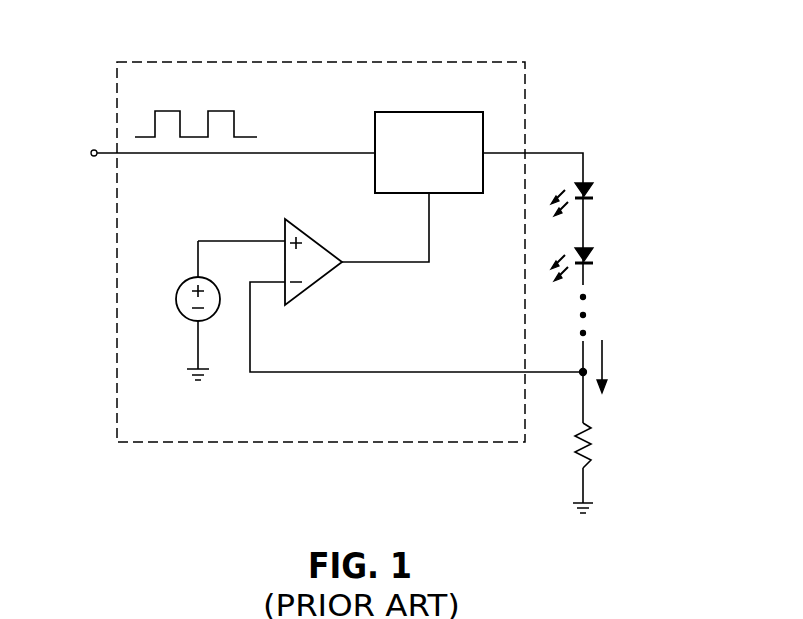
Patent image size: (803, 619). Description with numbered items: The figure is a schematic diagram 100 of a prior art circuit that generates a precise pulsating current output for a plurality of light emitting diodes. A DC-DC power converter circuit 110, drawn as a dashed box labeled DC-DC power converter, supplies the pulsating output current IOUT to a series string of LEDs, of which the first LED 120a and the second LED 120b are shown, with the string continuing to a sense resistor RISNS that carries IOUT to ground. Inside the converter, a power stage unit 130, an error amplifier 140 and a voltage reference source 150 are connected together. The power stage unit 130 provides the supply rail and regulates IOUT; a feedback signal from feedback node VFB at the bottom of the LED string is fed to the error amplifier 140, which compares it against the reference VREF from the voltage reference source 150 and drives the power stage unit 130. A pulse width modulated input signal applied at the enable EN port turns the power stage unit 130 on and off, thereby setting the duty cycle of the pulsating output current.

The schematic diagram 100 is at (144, 28).
The DC-DC power converter circuit 110 is at (503, 62).
The first LED 120a is at (594, 189).
The second LED 120b is at (594, 254).
The power stage unit 130 is at (455, 112).
The error amplifier 140 is at (318, 240).
The voltage reference source 150 is at (186, 321).